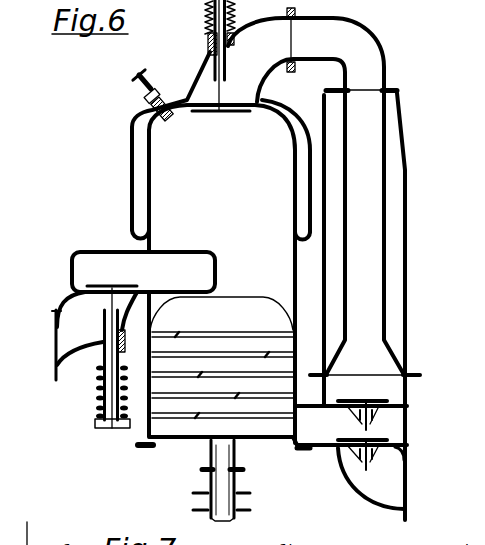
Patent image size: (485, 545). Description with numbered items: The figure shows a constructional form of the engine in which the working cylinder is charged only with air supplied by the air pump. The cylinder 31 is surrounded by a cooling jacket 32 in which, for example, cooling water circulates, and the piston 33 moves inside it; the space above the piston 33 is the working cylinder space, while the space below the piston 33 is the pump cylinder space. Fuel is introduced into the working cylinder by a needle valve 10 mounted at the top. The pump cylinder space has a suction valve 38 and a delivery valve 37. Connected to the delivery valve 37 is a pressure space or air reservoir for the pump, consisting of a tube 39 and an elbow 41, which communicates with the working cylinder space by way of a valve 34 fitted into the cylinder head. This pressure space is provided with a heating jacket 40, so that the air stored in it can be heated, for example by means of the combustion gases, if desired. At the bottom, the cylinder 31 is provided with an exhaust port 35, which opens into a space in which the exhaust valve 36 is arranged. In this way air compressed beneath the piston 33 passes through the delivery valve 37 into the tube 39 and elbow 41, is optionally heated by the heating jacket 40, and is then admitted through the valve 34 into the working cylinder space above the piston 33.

The needle valve 10 is at (175, 93).
The cylinder 31 is at (157, 207).
The cooling jacket 32 is at (131, 158).
The piston 33 is at (183, 407).
The valve 34 is at (208, 113).
The exhaust port 35 is at (190, 262).
The exhaust valve 36 is at (107, 285).
The delivery valve 37 is at (385, 400).
The suction valve 38 is at (387, 439).
The tube 39 is at (378, 273).
The heating jacket 40 is at (398, 208).
The elbow 41 is at (373, 53).